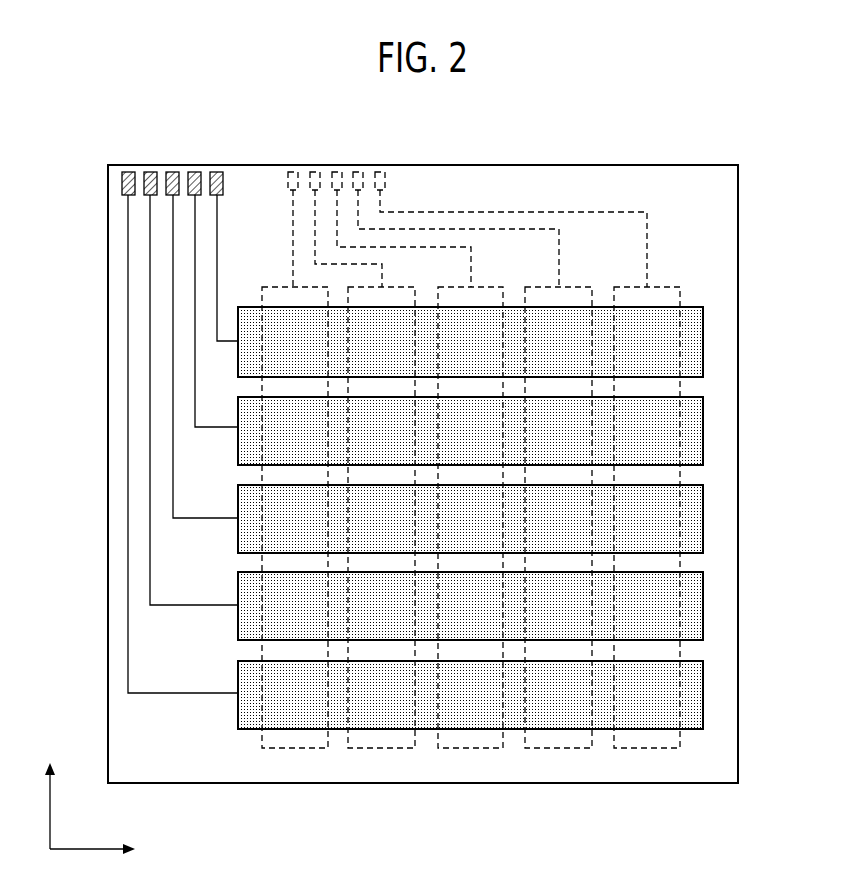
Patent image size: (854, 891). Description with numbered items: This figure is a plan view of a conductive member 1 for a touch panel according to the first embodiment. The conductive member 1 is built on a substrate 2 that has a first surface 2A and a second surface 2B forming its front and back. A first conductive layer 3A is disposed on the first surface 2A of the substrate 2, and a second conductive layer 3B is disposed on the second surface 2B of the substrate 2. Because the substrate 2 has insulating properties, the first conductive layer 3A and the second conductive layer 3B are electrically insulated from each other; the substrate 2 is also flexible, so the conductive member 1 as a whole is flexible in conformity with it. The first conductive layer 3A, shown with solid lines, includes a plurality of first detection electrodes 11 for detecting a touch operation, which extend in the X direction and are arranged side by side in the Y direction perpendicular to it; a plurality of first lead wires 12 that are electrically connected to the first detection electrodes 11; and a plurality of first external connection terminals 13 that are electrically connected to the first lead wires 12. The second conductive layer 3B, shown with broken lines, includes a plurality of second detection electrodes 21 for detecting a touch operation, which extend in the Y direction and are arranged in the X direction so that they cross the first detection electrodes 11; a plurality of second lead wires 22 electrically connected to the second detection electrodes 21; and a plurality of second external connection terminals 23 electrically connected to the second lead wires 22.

The conductive member for a touch panel 1 is at (752, 133).
The substrate 2 is at (740, 418).
The first surface 2A is at (717, 502).
The second surface 2B is at (717, 582).
The first conductive layer 3A is at (716, 310).
The second conductive layer 3B is at (677, 258).
The first detection electrode 11 is at (688, 703).
The first lead wire 12 is at (125, 654).
The first external connection terminal 13 is at (128, 172).
The second detection electrode 21 is at (646, 737).
The second lead wire 22 is at (593, 212).
The second external connection terminal 23 is at (380, 170).